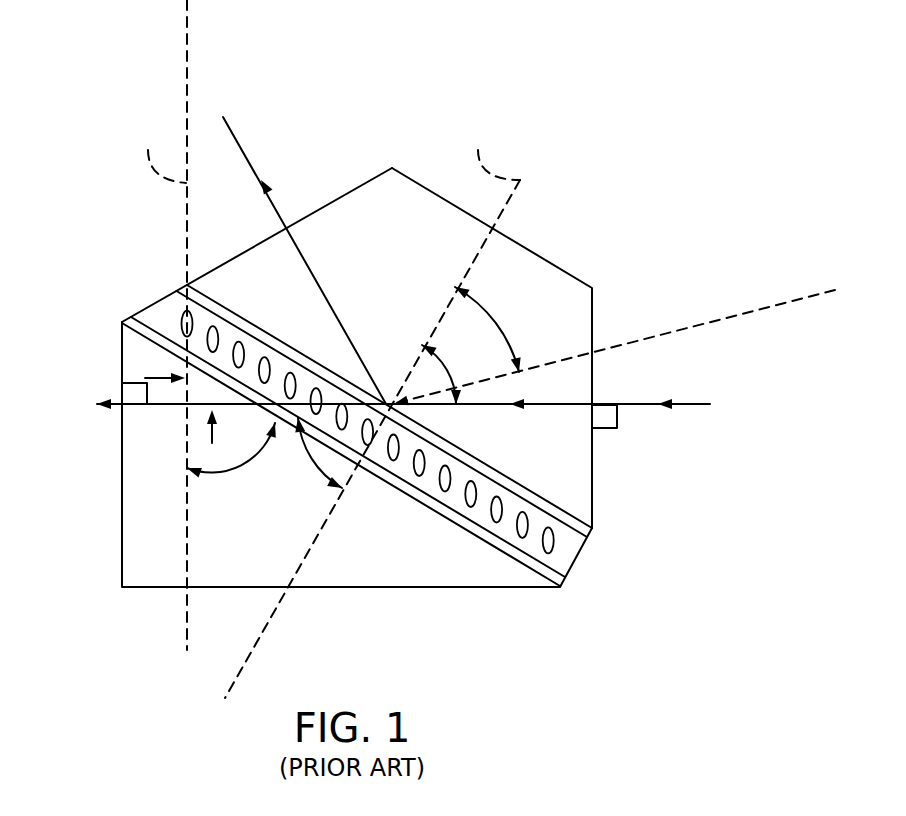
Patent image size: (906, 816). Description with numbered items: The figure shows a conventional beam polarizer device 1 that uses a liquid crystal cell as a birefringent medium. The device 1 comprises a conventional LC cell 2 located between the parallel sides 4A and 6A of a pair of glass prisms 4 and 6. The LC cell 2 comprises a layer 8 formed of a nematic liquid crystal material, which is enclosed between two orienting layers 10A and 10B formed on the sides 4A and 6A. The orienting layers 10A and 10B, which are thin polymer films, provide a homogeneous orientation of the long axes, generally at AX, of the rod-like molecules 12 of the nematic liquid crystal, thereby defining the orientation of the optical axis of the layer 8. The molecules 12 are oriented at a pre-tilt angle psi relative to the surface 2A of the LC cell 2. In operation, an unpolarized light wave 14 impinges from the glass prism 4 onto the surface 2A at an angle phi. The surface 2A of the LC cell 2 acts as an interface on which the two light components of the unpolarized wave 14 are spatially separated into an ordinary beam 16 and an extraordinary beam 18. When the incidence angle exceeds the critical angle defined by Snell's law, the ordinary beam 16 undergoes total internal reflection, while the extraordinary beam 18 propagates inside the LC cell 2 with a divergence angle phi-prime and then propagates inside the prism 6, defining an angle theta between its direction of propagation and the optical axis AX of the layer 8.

The beam polarizer device 1 is at (77, 96).
The LC cell 2 is at (310, 355).
The surface of the LC cell 2A is at (270, 332).
The glass prism 4 is at (530, 262).
The side of glass prism 4A is at (500, 470).
The glass prism 6 is at (150, 525).
The side of glass prism 6A is at (497, 550).
The layer of nematic liquid crystal material 8 is at (157, 312).
The orienting layer 10A is at (557, 507).
The orienting layer 10B is at (548, 575).
The rod-like molecules 12 is at (412, 473).
The unpolarized light wave 14 is at (643, 405).
The ordinary beam 16 is at (300, 200).
The extraordinary beam 18 is at (167, 407).